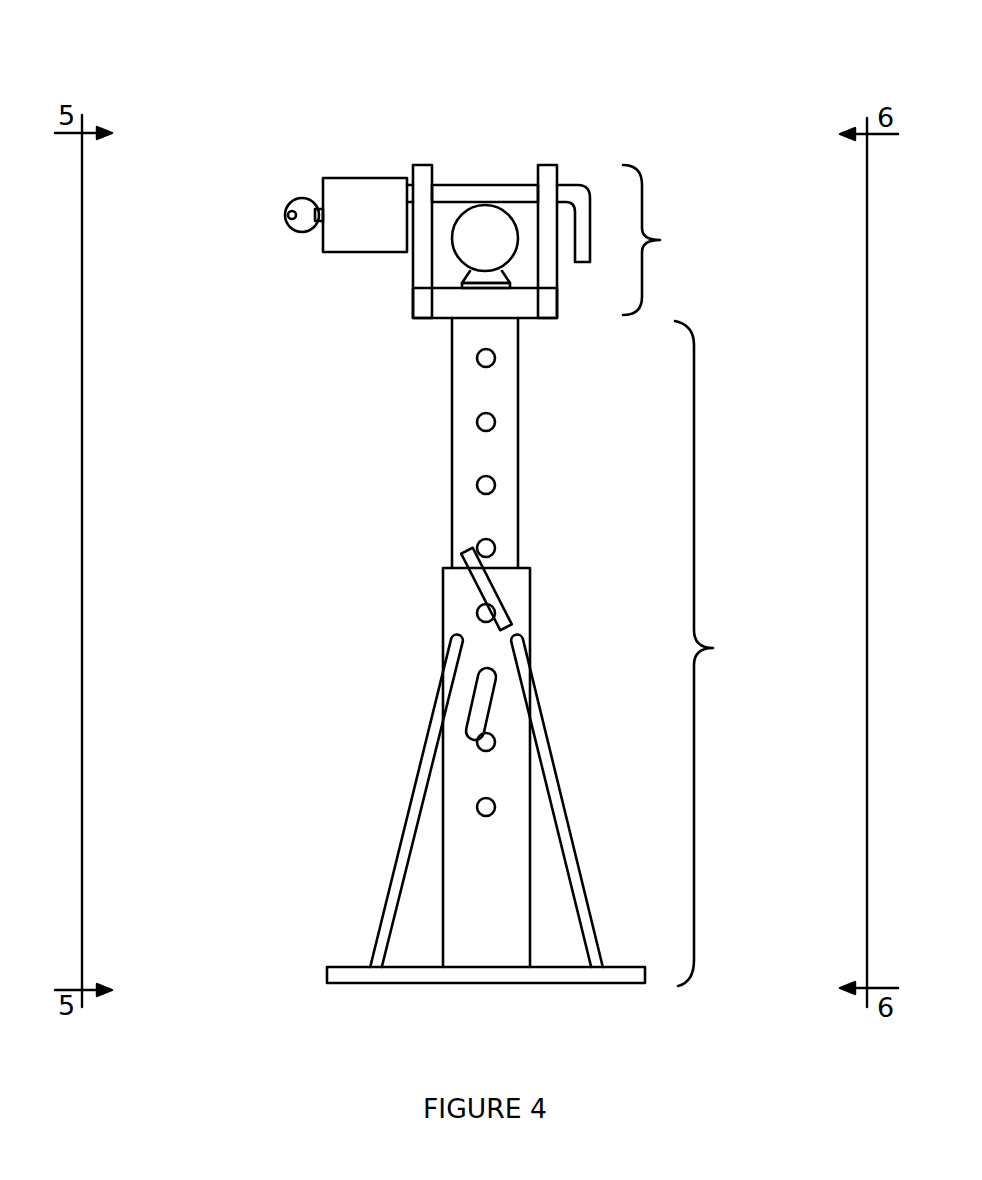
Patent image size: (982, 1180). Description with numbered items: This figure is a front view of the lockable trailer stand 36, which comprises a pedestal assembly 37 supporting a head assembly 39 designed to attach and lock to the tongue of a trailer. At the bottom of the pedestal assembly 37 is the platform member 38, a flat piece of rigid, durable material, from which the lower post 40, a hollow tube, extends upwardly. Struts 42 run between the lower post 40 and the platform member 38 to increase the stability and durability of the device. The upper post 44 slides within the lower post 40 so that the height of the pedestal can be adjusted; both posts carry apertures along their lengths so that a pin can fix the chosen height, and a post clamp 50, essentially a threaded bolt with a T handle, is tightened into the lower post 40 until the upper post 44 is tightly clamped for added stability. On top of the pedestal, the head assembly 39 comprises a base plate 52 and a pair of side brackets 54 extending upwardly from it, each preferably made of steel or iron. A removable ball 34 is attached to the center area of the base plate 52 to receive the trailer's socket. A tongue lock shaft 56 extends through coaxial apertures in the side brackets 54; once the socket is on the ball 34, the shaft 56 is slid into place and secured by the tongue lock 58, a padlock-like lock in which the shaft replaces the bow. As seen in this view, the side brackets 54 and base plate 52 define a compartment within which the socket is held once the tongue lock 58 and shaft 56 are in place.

The removable ball 34 is at (457, 255).
The lockable trailer stand 36 is at (268, 126).
The pedestal assembly 37 is at (713, 648).
The platform member 38 is at (343, 967).
The head assembly 39 is at (660, 240).
The lower post 40 is at (443, 628).
The struts 42 is at (540, 773).
The upper post 44 is at (452, 498).
The post clamp 50 is at (497, 602).
The base plate 52 is at (423, 318).
The side brackets 54 is at (419, 165).
The tongue lock shaft 56 is at (468, 184).
The tongue lock 58 is at (374, 178).